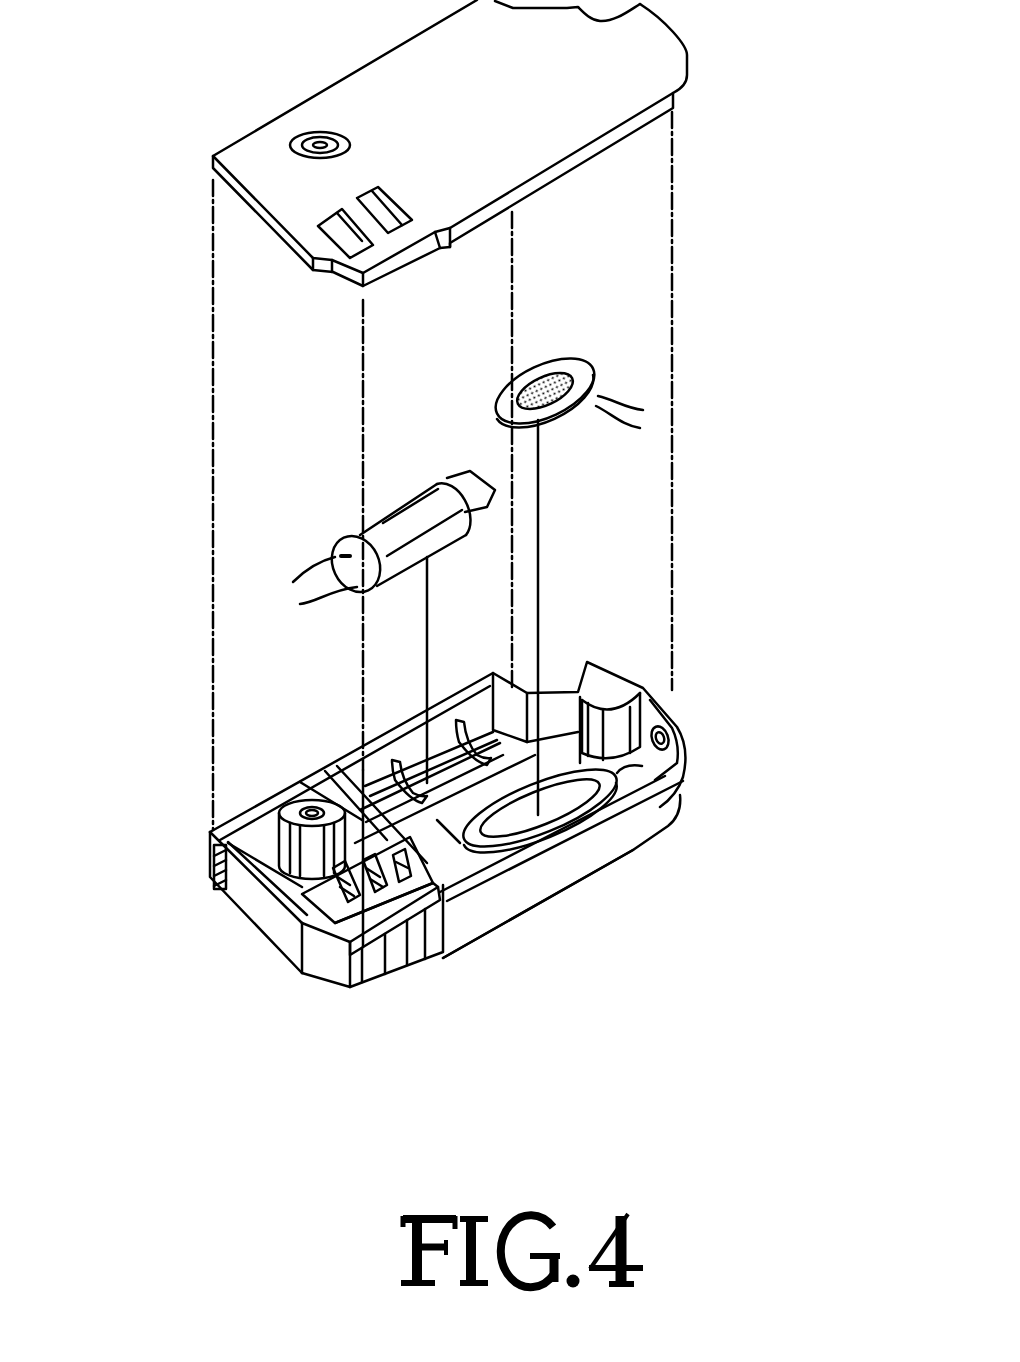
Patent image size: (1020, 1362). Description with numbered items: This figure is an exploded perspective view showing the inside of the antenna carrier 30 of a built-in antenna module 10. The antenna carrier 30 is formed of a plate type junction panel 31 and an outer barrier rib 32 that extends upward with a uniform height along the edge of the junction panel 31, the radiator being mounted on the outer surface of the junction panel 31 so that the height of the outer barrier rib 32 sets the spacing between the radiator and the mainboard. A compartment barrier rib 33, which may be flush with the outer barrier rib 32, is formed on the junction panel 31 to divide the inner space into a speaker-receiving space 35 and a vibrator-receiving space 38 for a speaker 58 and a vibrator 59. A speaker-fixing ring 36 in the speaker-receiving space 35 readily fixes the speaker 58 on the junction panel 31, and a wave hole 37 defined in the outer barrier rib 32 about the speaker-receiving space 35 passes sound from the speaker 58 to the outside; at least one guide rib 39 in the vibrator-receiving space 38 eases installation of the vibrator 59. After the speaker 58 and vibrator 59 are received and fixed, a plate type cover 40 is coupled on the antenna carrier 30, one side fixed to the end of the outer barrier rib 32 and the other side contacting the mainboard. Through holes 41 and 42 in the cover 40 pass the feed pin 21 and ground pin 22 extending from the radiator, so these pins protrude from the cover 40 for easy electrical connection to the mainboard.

The built-in antenna module 10 is at (760, 362).
The feed pin 21 is at (373, 975).
The ground pin 22 is at (407, 962).
The antenna carrier 30 is at (697, 723).
The junction panel 31 is at (272, 952).
The outer barrier rib 32 is at (550, 883).
The compartment barrier rib 33 is at (440, 820).
The speaker-receiving space 35 is at (625, 772).
The speaker-fixing ring 36 is at (612, 808).
The wave hole 37 is at (685, 754).
The vibrator-receiving space 38 is at (500, 745).
The guide rib 39 is at (460, 717).
The cover 40 is at (280, 198).
The through hole 41 is at (328, 268).
The through hole 42 is at (398, 225).
The speaker 58 is at (570, 372).
The vibrator 59 is at (400, 512).